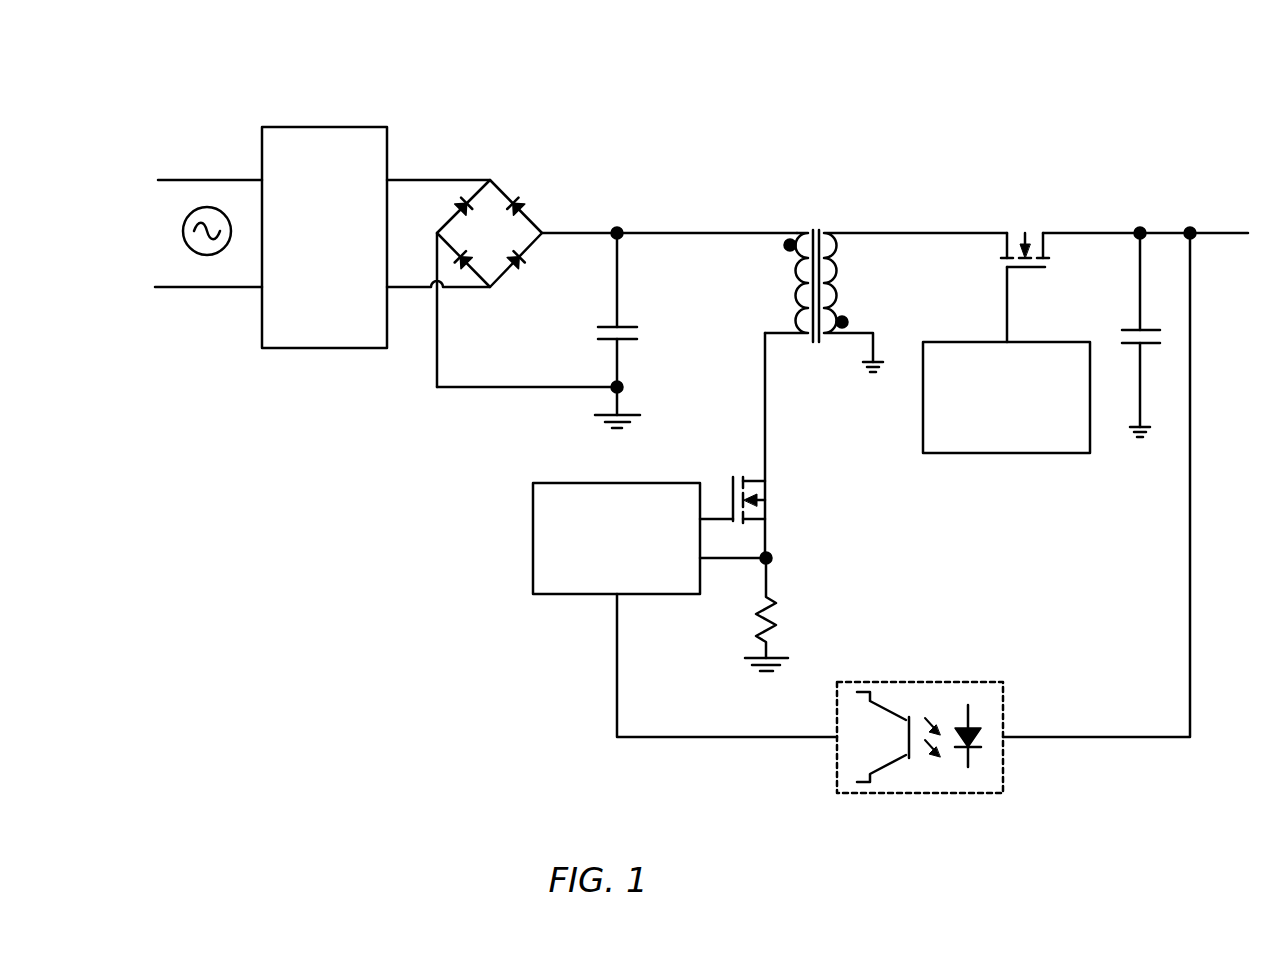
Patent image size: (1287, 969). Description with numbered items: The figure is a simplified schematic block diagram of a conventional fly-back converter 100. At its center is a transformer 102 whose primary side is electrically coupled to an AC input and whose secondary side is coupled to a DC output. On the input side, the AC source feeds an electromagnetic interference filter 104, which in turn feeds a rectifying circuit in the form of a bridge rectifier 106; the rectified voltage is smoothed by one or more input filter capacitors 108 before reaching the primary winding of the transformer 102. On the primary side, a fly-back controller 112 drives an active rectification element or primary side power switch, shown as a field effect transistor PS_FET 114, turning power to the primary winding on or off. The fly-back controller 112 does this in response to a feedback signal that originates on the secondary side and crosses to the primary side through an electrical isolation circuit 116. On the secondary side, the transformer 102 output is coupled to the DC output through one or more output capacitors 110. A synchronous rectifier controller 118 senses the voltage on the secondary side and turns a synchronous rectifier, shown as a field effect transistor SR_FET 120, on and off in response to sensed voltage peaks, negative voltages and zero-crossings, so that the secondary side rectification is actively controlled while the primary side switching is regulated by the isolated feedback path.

The fly-back converter 100 is at (119, 72).
The transformer 102 is at (811, 212).
The electromagnetic interference filter 104 is at (330, 348).
The bridge rectifier 106 is at (490, 160).
The input filter capacitor 108 is at (612, 326).
The output capacitor 110 is at (1130, 329).
The fly-back controller 112 is at (617, 483).
The primary side power switch field effect transistor 114 is at (785, 490).
The electrical isolation circuit 116 is at (920, 682).
The synchronous rectifier controller 118 is at (1010, 453).
The synchronous rectifier field effect transistor 120 is at (1017, 212).